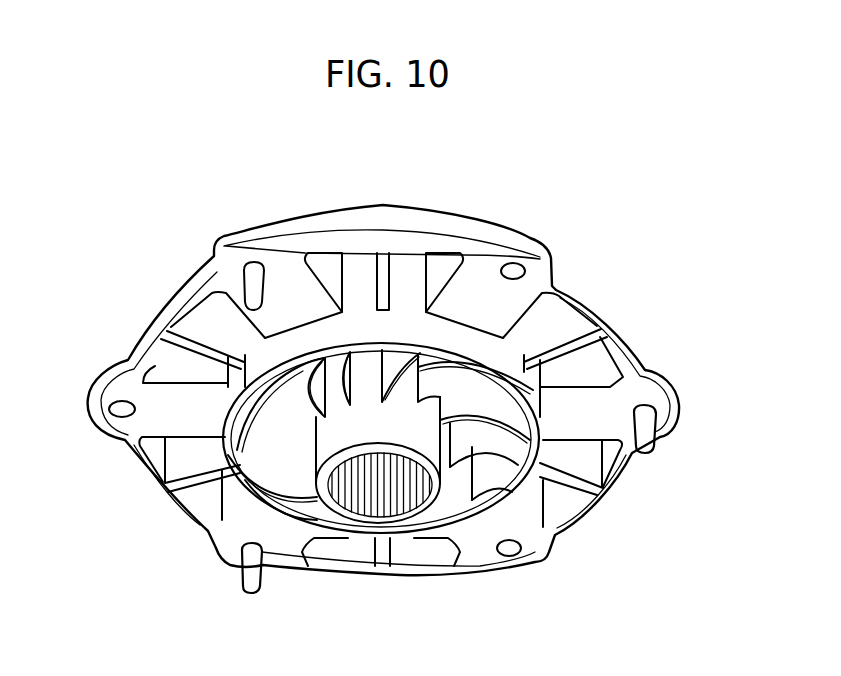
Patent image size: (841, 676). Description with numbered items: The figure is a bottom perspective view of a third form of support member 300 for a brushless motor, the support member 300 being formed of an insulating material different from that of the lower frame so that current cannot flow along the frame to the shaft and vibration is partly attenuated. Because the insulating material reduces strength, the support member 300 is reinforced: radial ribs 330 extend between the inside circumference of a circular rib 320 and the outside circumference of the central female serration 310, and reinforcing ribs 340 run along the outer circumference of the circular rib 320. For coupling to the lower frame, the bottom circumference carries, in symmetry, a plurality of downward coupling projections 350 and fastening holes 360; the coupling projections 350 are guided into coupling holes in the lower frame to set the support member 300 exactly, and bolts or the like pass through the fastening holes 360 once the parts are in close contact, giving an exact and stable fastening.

The support member 300 is at (473, 215).
The female serration 310 is at (357, 513).
The circular rib 320 is at (487, 513).
The radial ribs 330 is at (262, 462).
The reinforcing ribs 340 is at (560, 347).
The coupling projections 350 is at (655, 430).
The fastening holes 360 is at (122, 412).